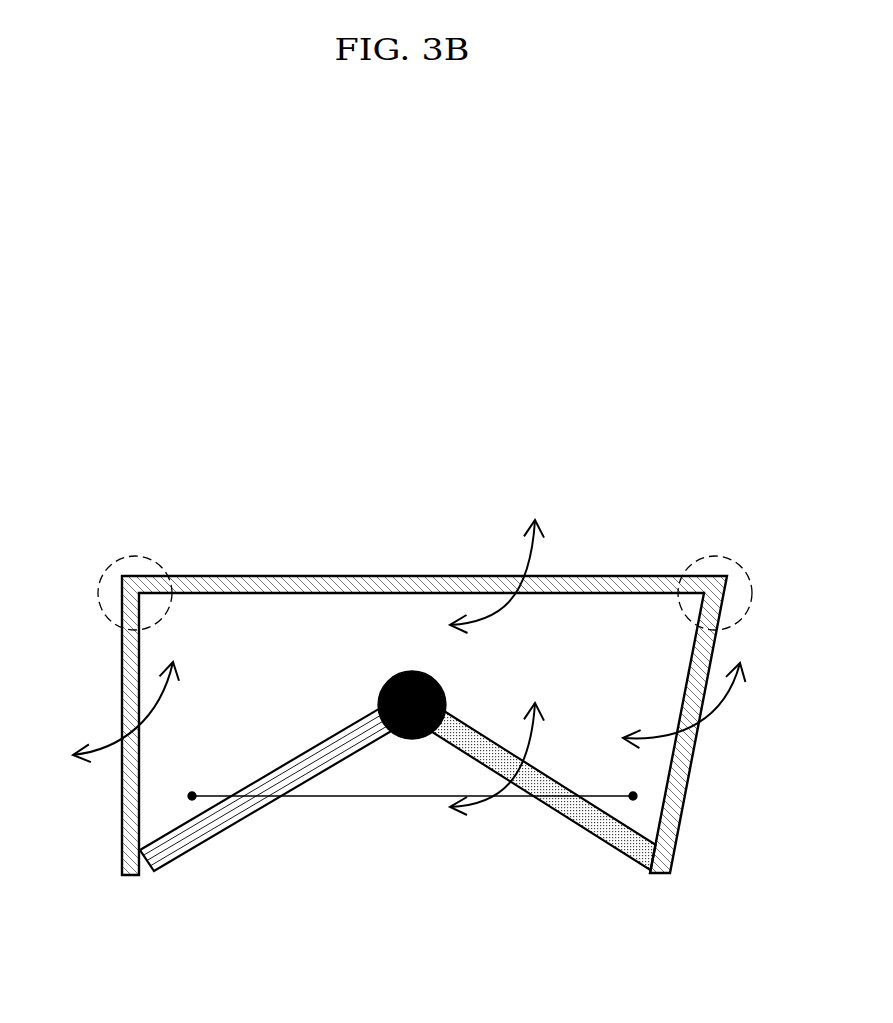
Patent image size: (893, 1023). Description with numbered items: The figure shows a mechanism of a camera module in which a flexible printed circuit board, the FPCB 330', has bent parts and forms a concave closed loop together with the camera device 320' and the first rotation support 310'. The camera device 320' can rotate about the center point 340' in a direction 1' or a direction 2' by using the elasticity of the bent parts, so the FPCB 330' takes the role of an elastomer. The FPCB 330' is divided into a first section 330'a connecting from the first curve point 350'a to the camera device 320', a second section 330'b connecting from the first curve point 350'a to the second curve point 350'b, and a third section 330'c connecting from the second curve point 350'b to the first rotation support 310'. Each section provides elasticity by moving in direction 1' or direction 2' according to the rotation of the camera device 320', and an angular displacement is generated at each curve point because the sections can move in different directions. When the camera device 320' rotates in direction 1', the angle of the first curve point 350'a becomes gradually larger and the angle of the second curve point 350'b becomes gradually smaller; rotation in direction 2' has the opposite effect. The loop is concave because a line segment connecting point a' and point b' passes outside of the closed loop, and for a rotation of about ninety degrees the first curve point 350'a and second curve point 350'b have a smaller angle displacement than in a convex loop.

The first rotation support 310' is at (276, 832).
The camera device 320' is at (531, 830).
The FPCB 330' is at (406, 700).
The first section 330'a is at (715, 724).
The second section 330'b is at (424, 559).
The third section 330'c is at (85, 725).
The center point 340' is at (384, 631).
The first curve point 350'a is at (748, 578).
The second curve point 350'b is at (156, 568).
The direction 1' is at (397, 670).
The direction 2' is at (461, 604).
The point a' is at (408, 777).
The point b' is at (634, 778).